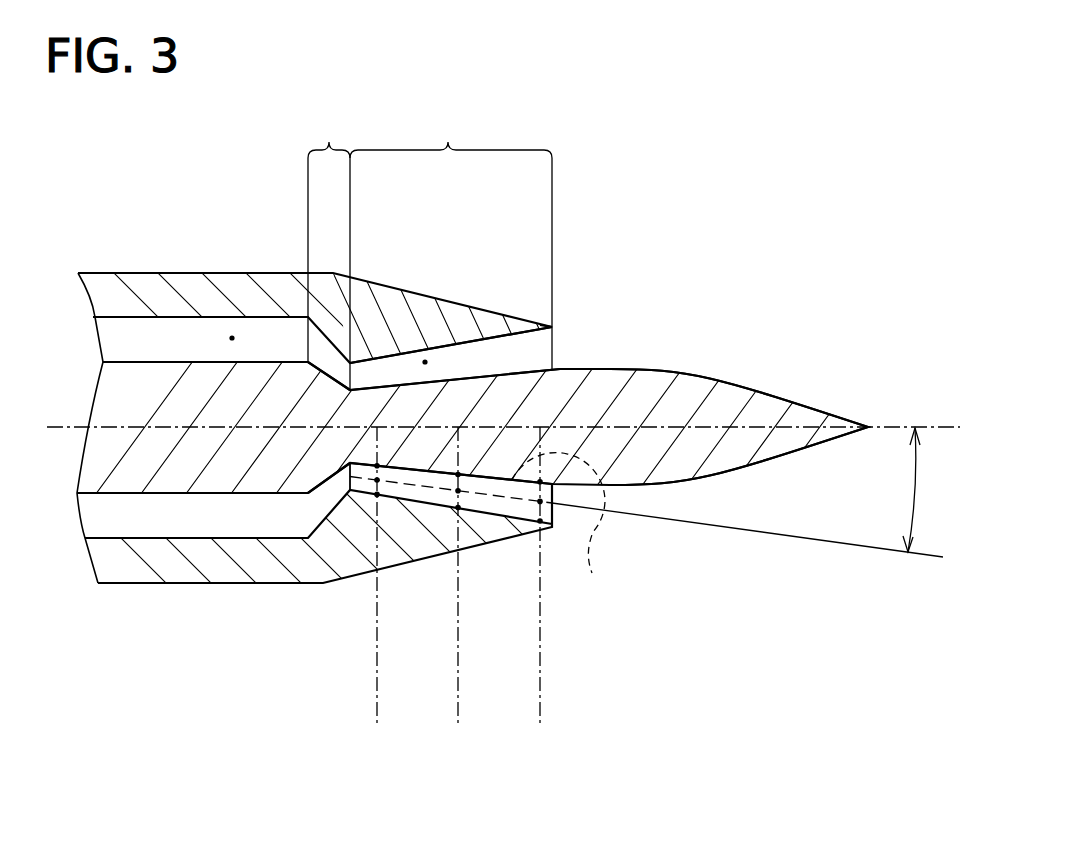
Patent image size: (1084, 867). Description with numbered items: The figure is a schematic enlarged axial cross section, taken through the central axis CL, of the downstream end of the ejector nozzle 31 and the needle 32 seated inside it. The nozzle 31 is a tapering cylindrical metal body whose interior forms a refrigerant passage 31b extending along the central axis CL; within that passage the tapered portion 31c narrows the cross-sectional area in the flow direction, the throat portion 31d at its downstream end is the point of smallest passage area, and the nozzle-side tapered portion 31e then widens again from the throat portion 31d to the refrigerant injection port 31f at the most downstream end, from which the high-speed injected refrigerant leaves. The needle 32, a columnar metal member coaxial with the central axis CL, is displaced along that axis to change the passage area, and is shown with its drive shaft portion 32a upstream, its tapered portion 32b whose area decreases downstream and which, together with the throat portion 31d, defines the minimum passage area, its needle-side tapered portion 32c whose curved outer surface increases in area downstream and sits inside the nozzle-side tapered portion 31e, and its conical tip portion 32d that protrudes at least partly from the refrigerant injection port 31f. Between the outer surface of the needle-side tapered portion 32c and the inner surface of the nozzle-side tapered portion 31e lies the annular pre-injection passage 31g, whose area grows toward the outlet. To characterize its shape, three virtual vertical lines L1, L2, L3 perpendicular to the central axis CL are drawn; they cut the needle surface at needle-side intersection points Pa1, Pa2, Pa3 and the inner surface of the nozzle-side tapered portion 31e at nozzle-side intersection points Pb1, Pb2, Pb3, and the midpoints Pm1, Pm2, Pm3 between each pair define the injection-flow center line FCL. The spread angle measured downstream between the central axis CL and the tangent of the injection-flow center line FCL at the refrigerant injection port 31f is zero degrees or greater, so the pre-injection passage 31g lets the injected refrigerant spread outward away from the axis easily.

The nozzle 31 is at (150, 297).
The refrigerant passage 31b is at (232, 338).
The tapered portion 31c is at (330, 297).
The throat portion 31d is at (388, 357).
The nozzle-side tapered portion 31e is at (451, 236).
The refrigerant injection port 31f is at (553, 327).
The pre-injection passage 31g is at (425, 362).
The needle 32 is at (191, 385).
The drive shaft portion 32a is at (142, 397).
The tapered portion 32b is at (320, 397).
The needle-side tapered portion 32c is at (482, 395).
The tip portion 32d is at (685, 388).
The central axis CL is at (947, 422).
The injection-flow center line FCL is at (646, 530).
The virtual vertical line L1 is at (377, 718).
The virtual vertical line L2 is at (458, 718).
The virtual vertical line L3 is at (540, 718).
The needle-side intersection point Pa1 is at (377, 466).
The midpoint Pm1 is at (377, 480).
The nozzle-side intersection point Pb1 is at (377, 494).
The needle-side intersection point Pa2 is at (458, 475).
The midpoint Pm2 is at (458, 491).
The nozzle-side intersection point Pb2 is at (458, 508).
The needle-side intersection point Pa3 is at (540, 482).
The midpoint Pm3 is at (540, 501).
The nozzle-side intersection point Pb3 is at (540, 521).